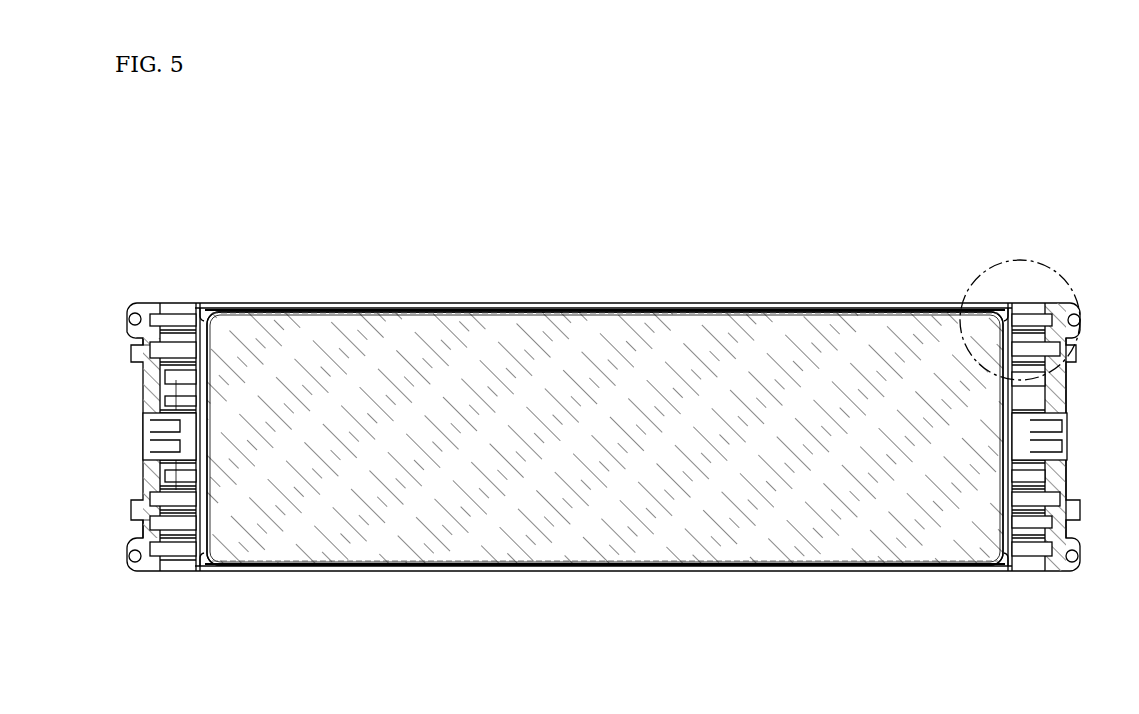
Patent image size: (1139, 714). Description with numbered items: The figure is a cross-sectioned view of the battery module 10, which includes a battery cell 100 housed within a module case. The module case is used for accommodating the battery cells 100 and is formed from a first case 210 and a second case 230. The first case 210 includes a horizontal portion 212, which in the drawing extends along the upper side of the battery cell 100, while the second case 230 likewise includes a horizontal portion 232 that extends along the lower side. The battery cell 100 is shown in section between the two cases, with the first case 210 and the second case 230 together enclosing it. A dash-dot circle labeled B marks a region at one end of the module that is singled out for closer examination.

The battery module 10 is at (250, 202).
The battery cell 100 is at (579, 336).
The first case 210 is at (374, 297).
The horizontal portion 212 is at (457, 303).
The second case 230 is at (560, 580).
The horizontal portion 232 is at (458, 574).
The detail region B is at (1082, 318).